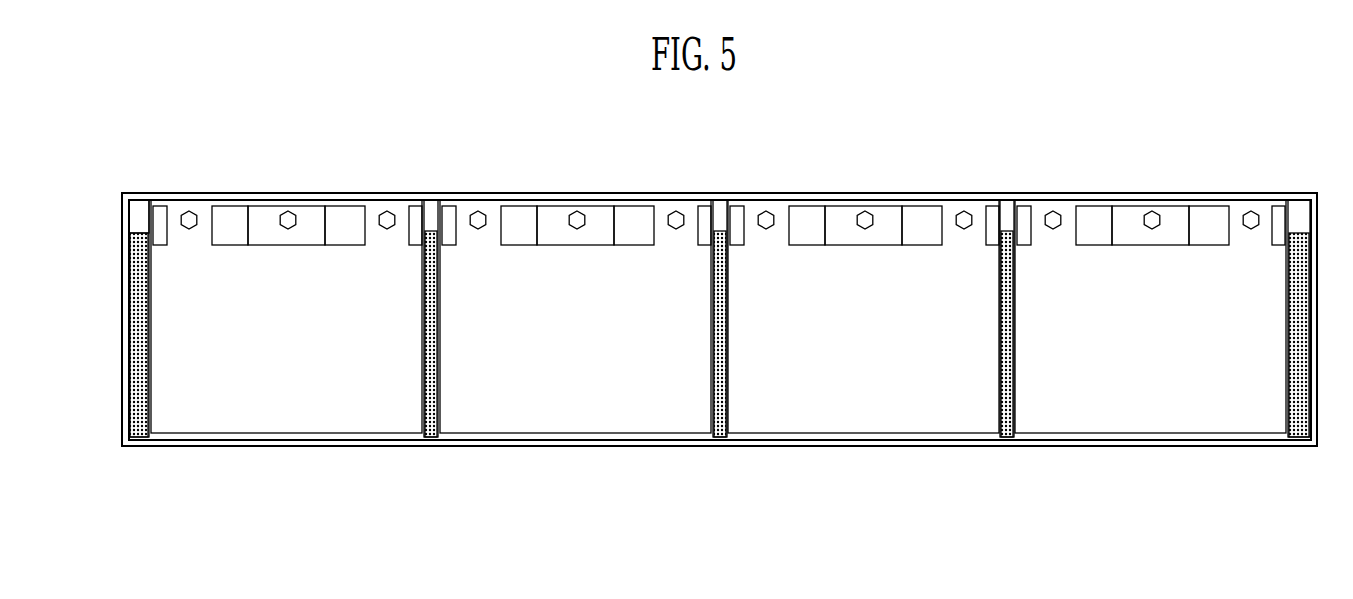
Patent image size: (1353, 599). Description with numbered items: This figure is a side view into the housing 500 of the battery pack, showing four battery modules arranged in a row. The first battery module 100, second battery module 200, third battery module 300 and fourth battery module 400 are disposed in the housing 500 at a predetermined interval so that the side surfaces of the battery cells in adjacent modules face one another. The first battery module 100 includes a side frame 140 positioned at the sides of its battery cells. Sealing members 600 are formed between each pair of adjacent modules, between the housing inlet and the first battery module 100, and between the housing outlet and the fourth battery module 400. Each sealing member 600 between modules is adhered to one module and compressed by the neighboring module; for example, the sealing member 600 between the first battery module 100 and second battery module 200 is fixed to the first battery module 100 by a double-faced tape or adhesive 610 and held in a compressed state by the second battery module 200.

The housing 500 is at (852, 193).
The first battery module 100 is at (293, 412).
The second battery module 200 is at (582, 412).
The third battery module 300 is at (870, 412).
The fourth battery module 400 is at (1157, 412).
The sealing member 600 is at (138, 438).
The adhesive 610 is at (163, 421).
The side frame 140 is at (153, 223).